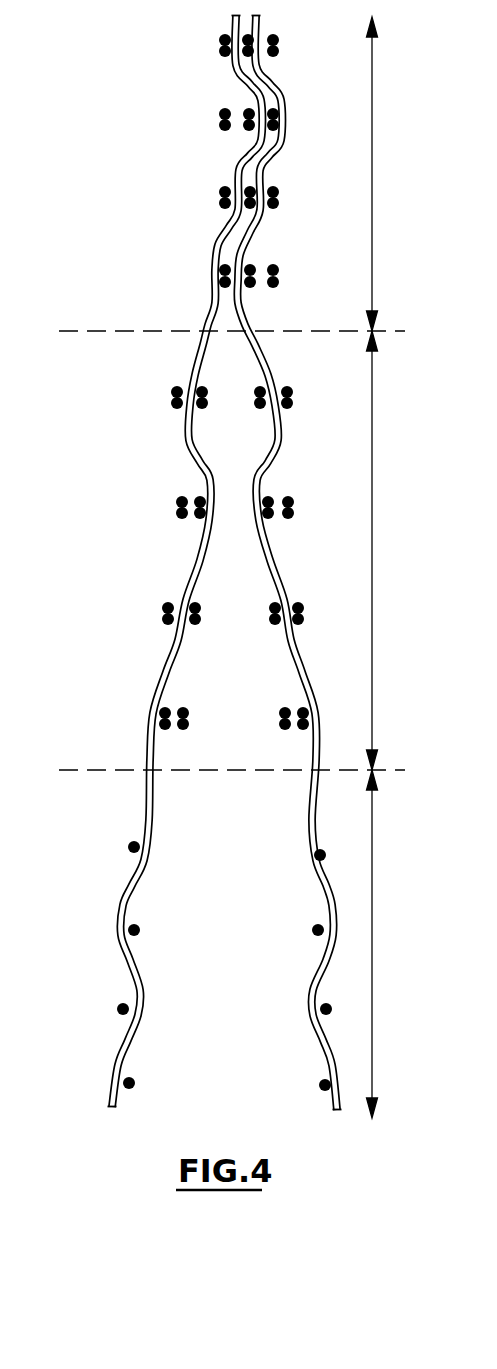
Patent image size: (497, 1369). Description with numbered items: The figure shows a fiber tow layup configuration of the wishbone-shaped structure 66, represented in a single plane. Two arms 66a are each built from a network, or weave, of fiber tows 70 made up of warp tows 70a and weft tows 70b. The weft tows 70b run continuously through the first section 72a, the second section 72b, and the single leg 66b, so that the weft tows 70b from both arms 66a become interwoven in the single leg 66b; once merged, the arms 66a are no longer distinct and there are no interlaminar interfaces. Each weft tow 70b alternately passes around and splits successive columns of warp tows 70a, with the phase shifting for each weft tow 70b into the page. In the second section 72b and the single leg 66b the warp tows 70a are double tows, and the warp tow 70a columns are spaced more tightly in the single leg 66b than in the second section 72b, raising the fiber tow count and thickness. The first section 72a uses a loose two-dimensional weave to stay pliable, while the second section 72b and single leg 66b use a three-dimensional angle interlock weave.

The structure 66 is at (235, 562).
The arms 66a is at (290, 852).
The single leg 66b is at (373, 198).
The fiber tows 70 is at (234, 599).
The warp tows 70a is at (283, 713).
The weft tows 70b is at (287, 650).
The first section 72a is at (373, 916).
The second section 72b is at (373, 553).